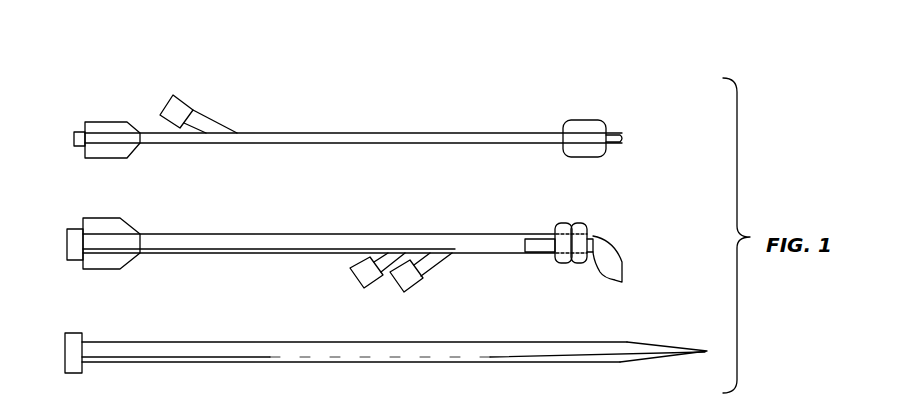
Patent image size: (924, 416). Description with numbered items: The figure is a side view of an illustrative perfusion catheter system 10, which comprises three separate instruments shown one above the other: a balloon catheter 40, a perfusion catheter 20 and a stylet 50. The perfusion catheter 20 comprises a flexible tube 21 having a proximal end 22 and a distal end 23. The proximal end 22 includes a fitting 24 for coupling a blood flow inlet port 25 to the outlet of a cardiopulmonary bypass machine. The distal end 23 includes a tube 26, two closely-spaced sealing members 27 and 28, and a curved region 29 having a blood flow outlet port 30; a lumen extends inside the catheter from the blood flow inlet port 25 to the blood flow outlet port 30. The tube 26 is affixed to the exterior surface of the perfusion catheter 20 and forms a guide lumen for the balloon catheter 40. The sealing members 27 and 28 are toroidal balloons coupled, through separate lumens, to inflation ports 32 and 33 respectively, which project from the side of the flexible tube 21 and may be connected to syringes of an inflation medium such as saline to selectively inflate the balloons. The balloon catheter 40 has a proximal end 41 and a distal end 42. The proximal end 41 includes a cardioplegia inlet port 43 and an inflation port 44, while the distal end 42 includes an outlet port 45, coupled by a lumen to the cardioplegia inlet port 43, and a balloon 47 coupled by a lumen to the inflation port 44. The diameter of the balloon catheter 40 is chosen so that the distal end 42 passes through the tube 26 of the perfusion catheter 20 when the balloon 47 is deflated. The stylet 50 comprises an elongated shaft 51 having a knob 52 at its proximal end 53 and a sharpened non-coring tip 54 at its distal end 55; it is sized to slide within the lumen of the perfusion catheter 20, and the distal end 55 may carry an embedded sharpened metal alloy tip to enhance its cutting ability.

The catheter system 10 is at (398, 86).
The perfusion catheter 20 is at (278, 226).
The flexible tube 21 is at (364, 233).
The proximal end 22 is at (165, 238).
The distal end 23 is at (510, 233).
The fitting 24 is at (75, 260).
The blood flow inlet port 25 is at (70, 229).
The tube 26 is at (543, 252).
The sealing member 27 is at (562, 223).
The sealing member 28 is at (580, 223).
The curved region 29 is at (620, 251).
The blood flow outlet port 30 is at (612, 279).
The inflation port 32 is at (353, 276).
The inflation port 33 is at (418, 285).
The balloon catheter 40 is at (283, 115).
The proximal end 41 is at (108, 122).
The distal end 42 is at (530, 133).
The cardioplegia inlet port 43 is at (74, 136).
The inflation port 44 is at (181, 97).
The outlet port 45 is at (624, 137).
The balloon 47 is at (587, 120).
The stylet 50 is at (187, 333).
The elongated shaft 51 is at (333, 360).
The knob 52 is at (65, 336).
The proximal end 53 is at (150, 363).
The sharpened non-coring tip 54 is at (706, 349).
The distal end 55 is at (610, 352).